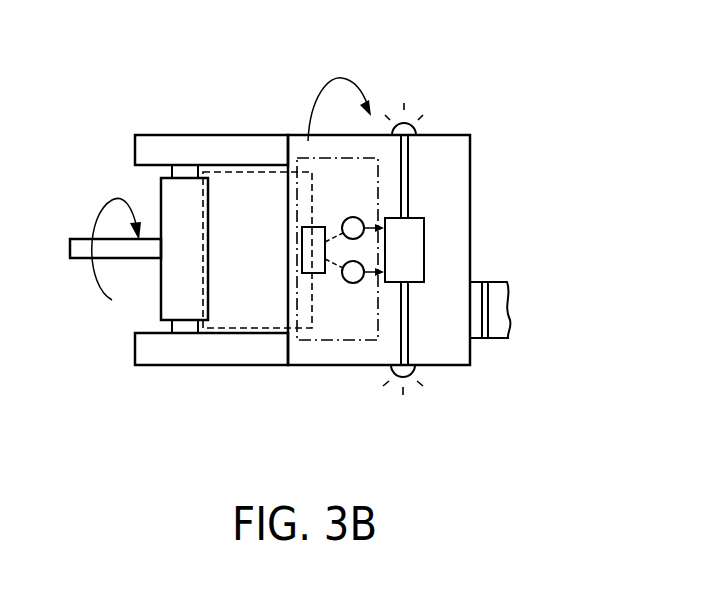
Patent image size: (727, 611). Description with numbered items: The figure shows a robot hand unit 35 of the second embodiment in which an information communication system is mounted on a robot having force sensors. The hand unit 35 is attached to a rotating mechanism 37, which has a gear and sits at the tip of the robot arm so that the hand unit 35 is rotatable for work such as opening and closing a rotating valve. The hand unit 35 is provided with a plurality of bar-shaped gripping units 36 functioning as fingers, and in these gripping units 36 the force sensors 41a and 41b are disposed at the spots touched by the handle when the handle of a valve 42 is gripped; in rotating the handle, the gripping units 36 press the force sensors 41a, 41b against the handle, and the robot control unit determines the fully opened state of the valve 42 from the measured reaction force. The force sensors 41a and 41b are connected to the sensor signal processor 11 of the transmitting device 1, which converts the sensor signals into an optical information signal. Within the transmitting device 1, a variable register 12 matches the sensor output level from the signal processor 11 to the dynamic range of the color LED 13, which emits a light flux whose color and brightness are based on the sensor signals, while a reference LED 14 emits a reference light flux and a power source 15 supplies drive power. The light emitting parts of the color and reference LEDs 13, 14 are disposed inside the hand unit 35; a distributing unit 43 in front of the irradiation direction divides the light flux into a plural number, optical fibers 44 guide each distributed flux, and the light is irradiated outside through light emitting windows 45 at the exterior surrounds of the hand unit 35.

The transmitting device 1 is at (313, 345).
The sensor signal processor 11 is at (302, 192).
The variable register 12 is at (302, 192).
The color LED 13 is at (355, 283).
The reference LED 14 is at (352, 217).
The power source 15 is at (308, 226).
The hand unit 35 is at (341, 366).
The gripping unit 36 is at (247, 135).
The rotating mechanism 37 is at (486, 338).
The force sensor 41a is at (185, 327).
The force sensor 41b is at (183, 176).
The valve 42 is at (80, 260).
The distributing unit 43 is at (423, 243).
The optical fibers 44 is at (410, 165).
The light emitting windows 45 is at (418, 130).